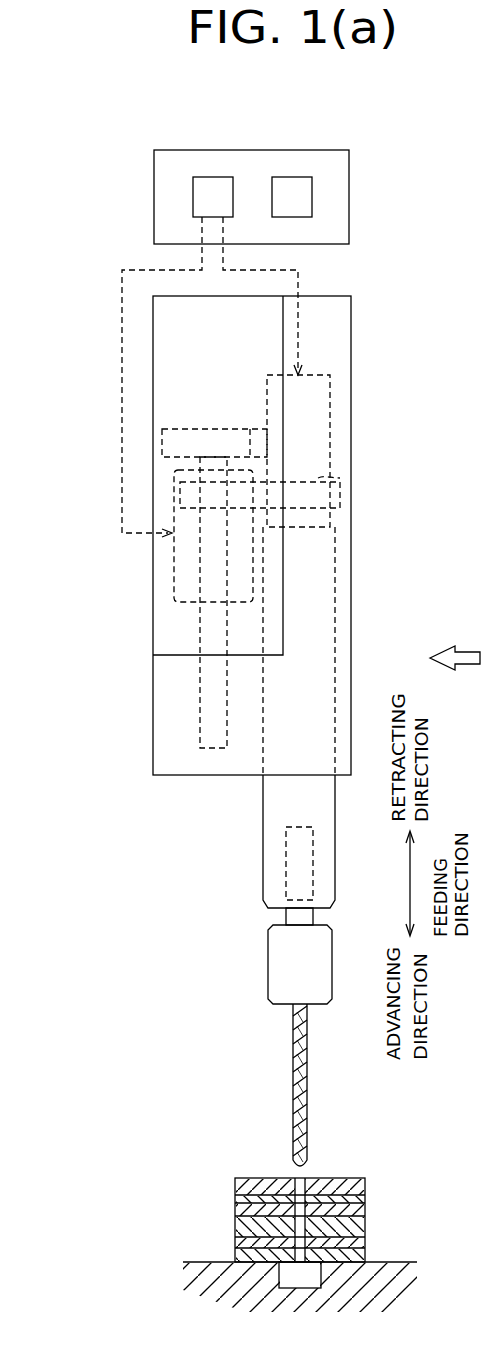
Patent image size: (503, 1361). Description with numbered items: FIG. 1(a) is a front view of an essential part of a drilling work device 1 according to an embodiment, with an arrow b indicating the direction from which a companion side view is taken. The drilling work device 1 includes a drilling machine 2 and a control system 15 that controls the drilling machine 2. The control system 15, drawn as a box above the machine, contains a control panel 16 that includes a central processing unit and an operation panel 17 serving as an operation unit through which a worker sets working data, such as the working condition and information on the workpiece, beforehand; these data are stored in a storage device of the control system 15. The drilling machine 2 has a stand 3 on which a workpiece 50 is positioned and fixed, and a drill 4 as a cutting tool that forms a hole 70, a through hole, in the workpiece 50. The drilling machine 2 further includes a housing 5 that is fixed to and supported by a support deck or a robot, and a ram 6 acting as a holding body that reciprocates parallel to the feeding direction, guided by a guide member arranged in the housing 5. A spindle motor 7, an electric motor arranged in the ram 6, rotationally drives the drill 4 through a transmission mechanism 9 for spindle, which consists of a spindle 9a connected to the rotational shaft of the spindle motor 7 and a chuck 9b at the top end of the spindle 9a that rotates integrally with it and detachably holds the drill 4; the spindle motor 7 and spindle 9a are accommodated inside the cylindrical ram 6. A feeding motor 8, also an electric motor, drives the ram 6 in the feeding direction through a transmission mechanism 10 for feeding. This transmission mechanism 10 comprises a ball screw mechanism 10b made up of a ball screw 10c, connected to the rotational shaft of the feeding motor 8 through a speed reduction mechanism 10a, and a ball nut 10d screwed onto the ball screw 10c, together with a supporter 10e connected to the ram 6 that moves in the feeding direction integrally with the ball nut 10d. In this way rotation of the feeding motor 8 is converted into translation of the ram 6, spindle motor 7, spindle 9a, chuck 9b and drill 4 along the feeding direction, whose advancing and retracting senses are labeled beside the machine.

The drilling work device 1 is at (446, 286).
The drilling machine 2 is at (150, 866).
The stand 3 is at (387, 1268).
The drill 4 is at (298, 1057).
The housing 5 is at (352, 568).
The ram 6 is at (275, 812).
The spindle motor 7 is at (330, 420).
The feeding motor 8 is at (175, 585).
The transmission mechanism for spindle 9 is at (200, 908).
The spindle 9a is at (281, 917).
The chuck 9b is at (278, 957).
The transmission mechanism for feeding 10 is at (185, 406).
The speed reduction mechanism 10a is at (223, 429).
The ball screw mechanism 10b is at (60, 493).
The ball screw 10c is at (200, 567).
The ball nut 10d is at (180, 497).
The supporter 10e is at (318, 478).
The control system 15 is at (263, 150).
The control panel 16 is at (220, 177).
The operation panel 17 is at (298, 177).
The workpiece 50 is at (233, 1162).
The hole 70 is at (303, 1178).
The arrow b is at (463, 660).